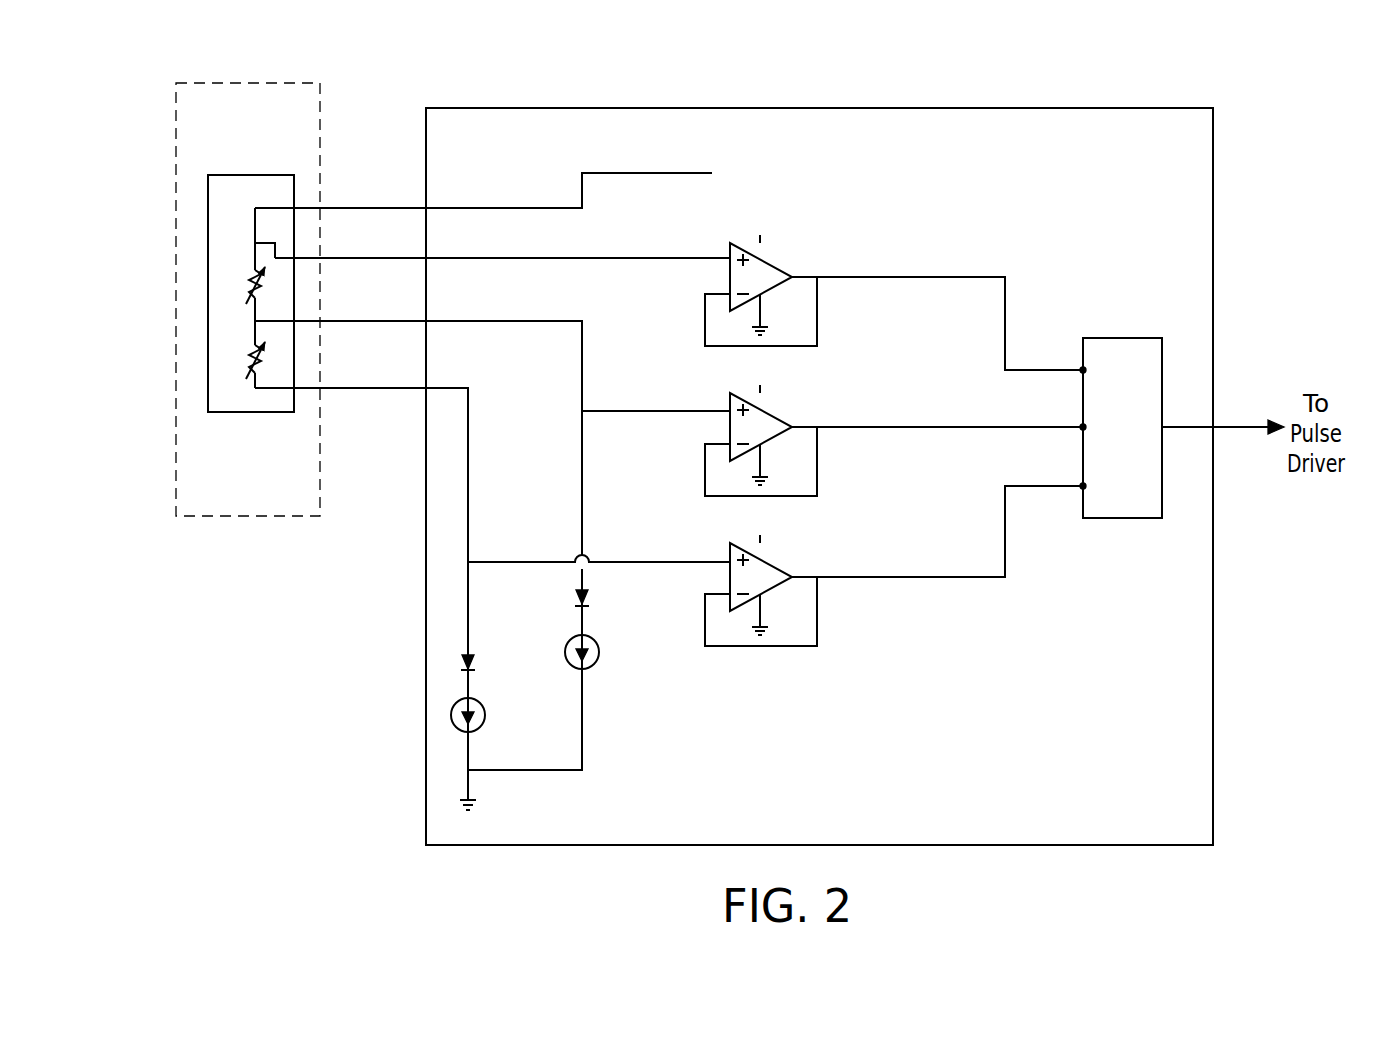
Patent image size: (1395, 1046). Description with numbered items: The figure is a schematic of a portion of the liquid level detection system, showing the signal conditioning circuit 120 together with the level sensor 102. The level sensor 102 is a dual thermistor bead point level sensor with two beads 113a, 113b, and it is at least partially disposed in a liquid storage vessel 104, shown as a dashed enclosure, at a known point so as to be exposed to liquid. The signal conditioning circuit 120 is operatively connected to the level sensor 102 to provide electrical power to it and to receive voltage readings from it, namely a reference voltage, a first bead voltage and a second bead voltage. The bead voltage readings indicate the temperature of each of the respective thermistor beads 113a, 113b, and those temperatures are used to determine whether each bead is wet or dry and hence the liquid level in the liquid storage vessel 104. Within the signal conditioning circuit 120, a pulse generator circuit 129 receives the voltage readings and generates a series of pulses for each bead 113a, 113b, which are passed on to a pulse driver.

The level sensor 102 is at (195, 287).
The liquid storage vessel 104 is at (260, 493).
The thermistor bead 113a is at (240, 310).
The thermistor bead 113b is at (243, 380).
The signal conditioning circuit 120 is at (1190, 99).
The pulse generator circuit 129 is at (1113, 338).